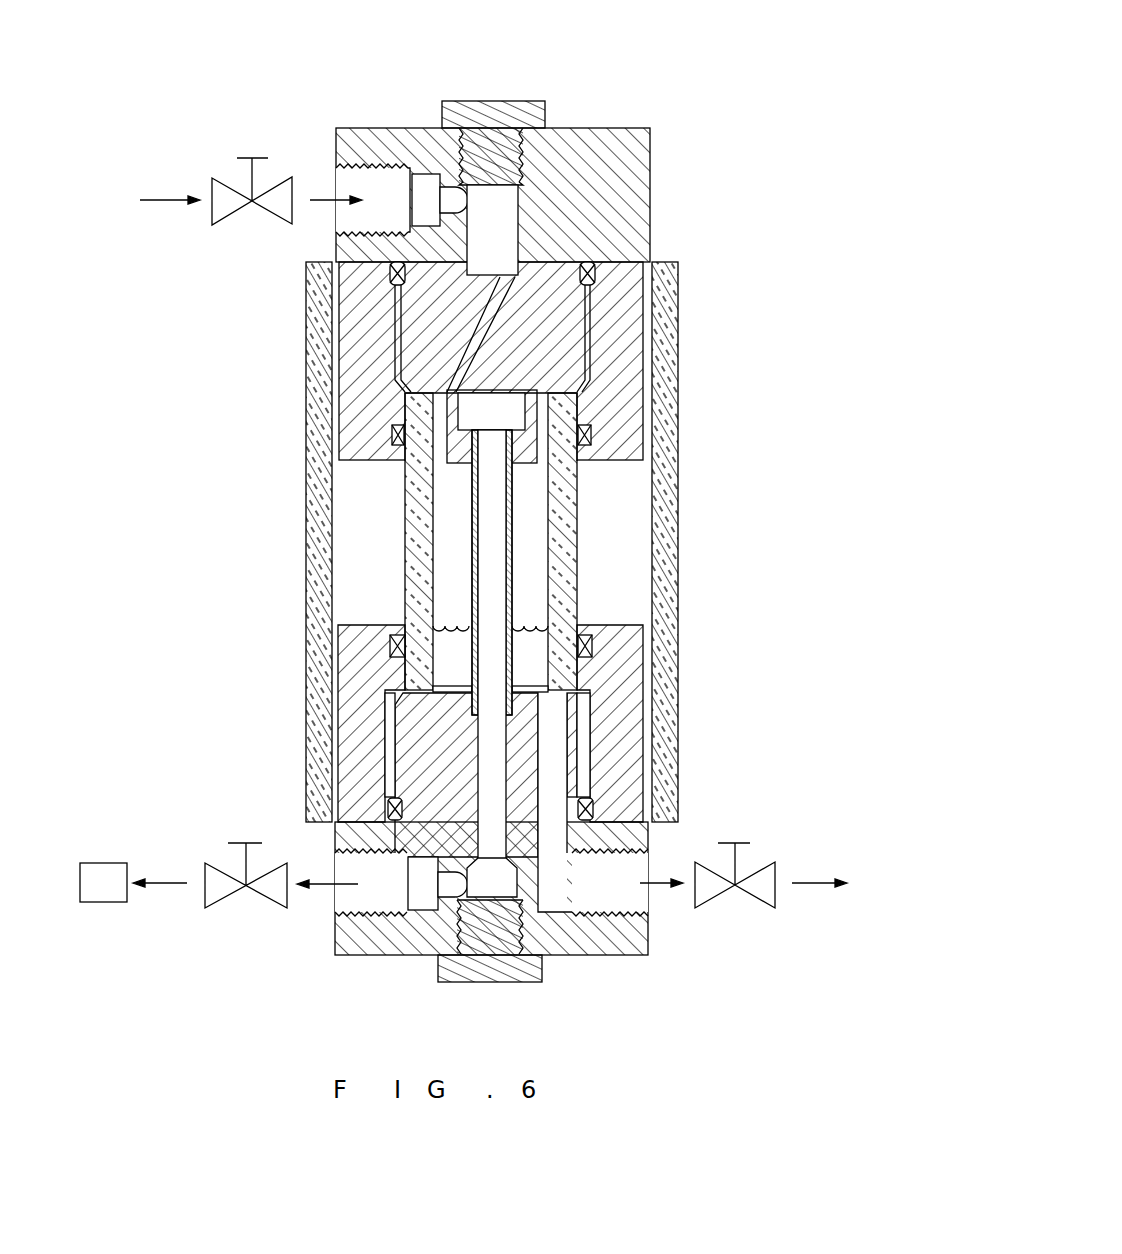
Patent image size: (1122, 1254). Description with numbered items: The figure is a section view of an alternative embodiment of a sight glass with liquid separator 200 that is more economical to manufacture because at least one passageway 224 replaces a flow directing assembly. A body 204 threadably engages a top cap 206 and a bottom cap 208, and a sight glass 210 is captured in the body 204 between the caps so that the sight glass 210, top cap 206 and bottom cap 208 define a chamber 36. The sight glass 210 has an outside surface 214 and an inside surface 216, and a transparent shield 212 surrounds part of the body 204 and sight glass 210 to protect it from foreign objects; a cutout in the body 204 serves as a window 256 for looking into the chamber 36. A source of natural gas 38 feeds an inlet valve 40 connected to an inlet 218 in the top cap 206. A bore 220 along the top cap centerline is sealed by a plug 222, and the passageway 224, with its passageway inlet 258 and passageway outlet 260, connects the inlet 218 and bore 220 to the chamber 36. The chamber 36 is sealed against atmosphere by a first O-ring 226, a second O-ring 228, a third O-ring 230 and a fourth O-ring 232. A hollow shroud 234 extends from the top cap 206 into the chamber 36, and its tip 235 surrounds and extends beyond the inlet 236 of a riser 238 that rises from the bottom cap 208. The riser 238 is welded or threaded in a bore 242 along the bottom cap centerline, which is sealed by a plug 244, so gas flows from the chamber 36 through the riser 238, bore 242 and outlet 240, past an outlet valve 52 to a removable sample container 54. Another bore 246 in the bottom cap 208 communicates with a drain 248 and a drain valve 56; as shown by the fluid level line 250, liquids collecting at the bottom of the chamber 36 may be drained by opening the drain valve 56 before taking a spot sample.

The chamber 36 is at (530, 495).
The source of natural gas 38 is at (118, 203).
The inlet valve 40 is at (213, 178).
The outlet valve 52 is at (222, 900).
The removable sample container 54 is at (133, 882).
The drain valve 56 is at (765, 908).
The sight glass with liquid separator 200 is at (710, 95).
The body 204 is at (623, 297).
The top cap 206 is at (600, 193).
The bottom cap 208 is at (632, 955).
The sight glass 210 is at (565, 410).
The shield 212 is at (668, 668).
The outside surface 214 is at (403, 533).
The inside surface 216 is at (453, 566).
The inlet 218 is at (392, 186).
The bore 220 is at (520, 190).
The plug 222 is at (473, 100).
The passageway 224 is at (483, 312).
The first O-ring 226 is at (392, 275).
The second O-ring 228 is at (407, 400).
The third O-ring 230 is at (390, 803).
The fourth O-ring 232 is at (390, 650).
The hollow shroud 234 is at (447, 408).
The tip of the shroud 235 is at (582, 473).
The inlet of the riser 236 is at (455, 462).
The riser 238 is at (470, 492).
The outlet 240 is at (408, 893).
The bore 242 is at (497, 773).
The plug 244 is at (483, 982).
The bore 246 is at (595, 805).
The drain 248 is at (562, 893).
The fluid level line 250 is at (535, 612).
The window 256 is at (613, 542).
The passageway inlet 258 is at (515, 258).
The passageway outlet 260 is at (445, 380).